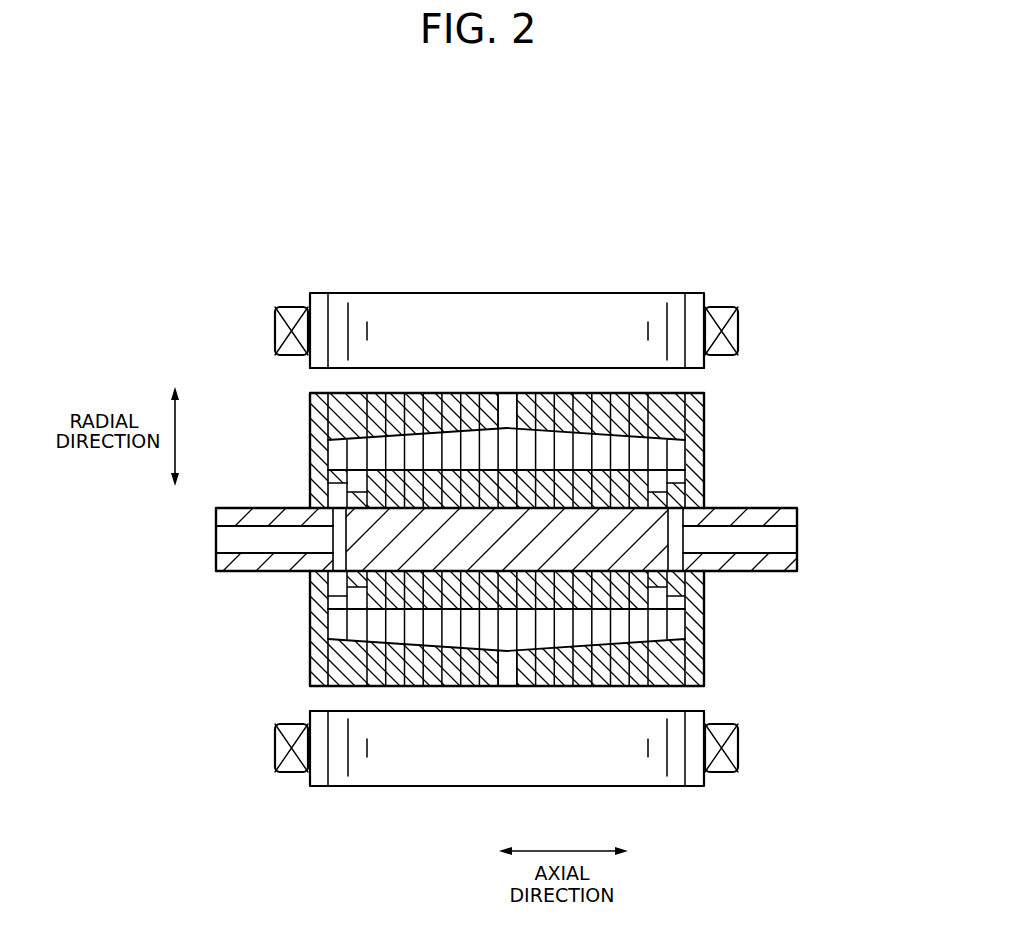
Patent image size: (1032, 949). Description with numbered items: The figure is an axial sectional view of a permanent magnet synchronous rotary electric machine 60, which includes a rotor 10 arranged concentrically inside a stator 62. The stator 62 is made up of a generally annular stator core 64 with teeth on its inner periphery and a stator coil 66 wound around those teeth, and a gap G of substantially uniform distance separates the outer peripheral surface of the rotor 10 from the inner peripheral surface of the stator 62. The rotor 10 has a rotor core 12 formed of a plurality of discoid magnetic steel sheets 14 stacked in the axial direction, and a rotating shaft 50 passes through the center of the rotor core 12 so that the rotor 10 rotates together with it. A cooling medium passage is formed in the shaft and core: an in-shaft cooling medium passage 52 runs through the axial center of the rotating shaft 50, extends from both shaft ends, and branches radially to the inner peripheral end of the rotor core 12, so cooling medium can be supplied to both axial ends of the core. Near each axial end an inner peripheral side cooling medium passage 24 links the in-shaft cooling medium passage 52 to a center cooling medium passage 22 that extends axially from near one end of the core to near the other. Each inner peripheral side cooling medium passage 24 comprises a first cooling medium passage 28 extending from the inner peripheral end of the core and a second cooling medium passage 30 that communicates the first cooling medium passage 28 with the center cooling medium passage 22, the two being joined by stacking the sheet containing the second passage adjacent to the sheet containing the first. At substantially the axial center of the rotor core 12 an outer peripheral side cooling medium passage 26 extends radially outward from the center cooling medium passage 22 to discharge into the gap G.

The rotor 10 is at (280, 425).
The rotor core 12 is at (693, 412).
The magnetic steel sheet 14 is at (453, 678).
The center cooling medium passage 22 is at (452, 443).
The inner peripheral side cooling medium passage 24 is at (600, 532).
The outer peripheral side cooling medium passage 26 is at (507, 403).
The first cooling medium passage 28 is at (680, 498).
The second cooling medium passage 30 is at (658, 477).
The rotating shaft 50 is at (585, 545).
The in-shaft cooling medium passage 52 is at (785, 540).
The rotary electric machine 60 is at (248, 240).
The stator 62 is at (663, 273).
The stator core 64 is at (540, 307).
The stator coil 66 is at (733, 310).
The gap G is at (690, 382).